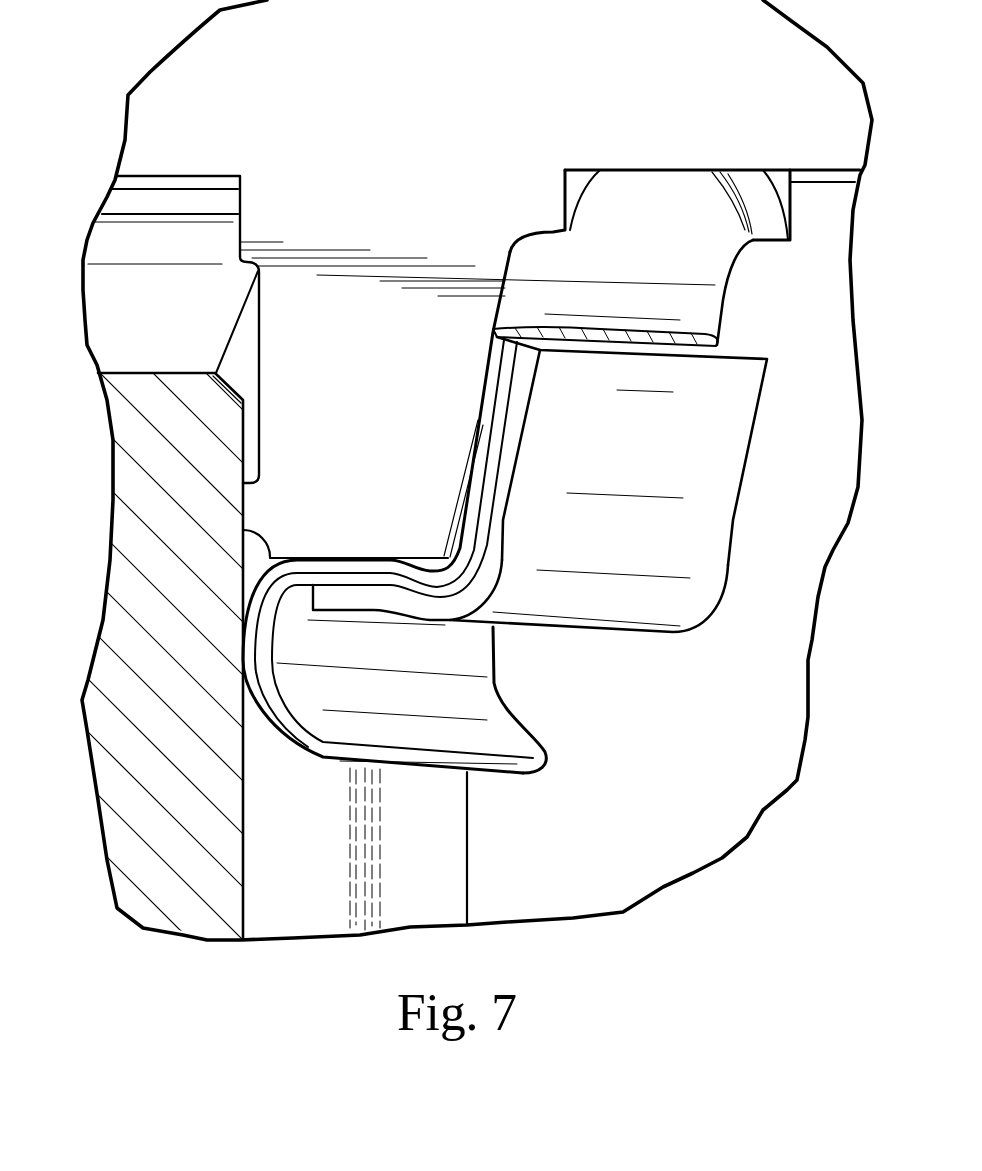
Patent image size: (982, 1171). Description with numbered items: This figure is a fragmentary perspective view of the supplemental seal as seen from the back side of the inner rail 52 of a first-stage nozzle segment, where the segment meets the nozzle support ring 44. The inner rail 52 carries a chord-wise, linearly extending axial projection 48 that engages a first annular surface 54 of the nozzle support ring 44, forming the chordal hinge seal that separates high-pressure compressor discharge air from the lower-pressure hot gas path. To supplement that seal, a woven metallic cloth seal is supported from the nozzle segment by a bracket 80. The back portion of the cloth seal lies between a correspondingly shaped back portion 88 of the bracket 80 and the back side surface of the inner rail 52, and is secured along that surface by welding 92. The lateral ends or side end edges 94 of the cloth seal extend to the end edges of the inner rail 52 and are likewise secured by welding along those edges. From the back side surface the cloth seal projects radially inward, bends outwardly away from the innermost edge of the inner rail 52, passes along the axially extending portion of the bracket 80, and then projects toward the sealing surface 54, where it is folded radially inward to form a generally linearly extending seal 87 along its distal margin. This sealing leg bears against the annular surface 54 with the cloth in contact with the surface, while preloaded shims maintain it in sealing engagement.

The nozzle support ring 44 is at (138, 758).
The axial projection 48 is at (253, 508).
The inner rail 52 is at (347, 399).
The first annular surface 54 is at (297, 910).
The bracket 80 is at (703, 452).
The linearly extending seal 87 is at (243, 632).
The back portion of the bracket 88 is at (633, 540).
The welding 92 is at (693, 329).
The side end edges 94 is at (437, 556).